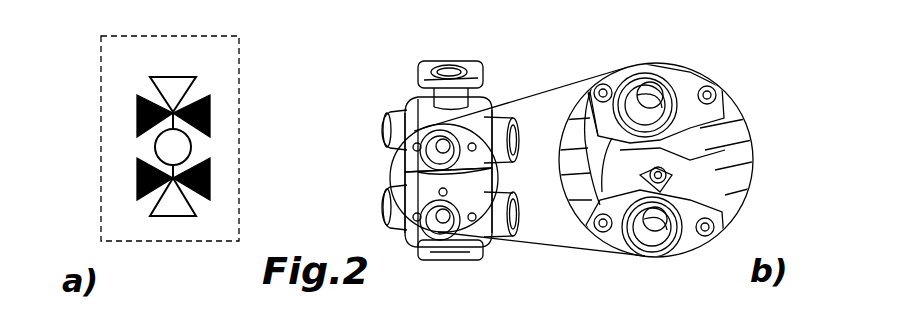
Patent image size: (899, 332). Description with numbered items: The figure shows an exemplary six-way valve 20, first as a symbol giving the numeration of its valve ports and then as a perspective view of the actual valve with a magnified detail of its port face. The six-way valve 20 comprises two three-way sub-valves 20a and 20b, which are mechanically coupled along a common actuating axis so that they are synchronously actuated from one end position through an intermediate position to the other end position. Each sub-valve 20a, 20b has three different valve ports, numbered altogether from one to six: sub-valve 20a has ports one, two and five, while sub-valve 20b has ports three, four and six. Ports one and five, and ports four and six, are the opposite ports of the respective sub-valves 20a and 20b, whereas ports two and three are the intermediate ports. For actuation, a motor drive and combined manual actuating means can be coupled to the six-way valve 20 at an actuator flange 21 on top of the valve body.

The 6-way valve 20 is at (100, 77).
The 3-way sub-valve 20a is at (374, 100).
The 3-way sub-valve 20b is at (372, 190).
The actuator flange 21 is at (480, 72).